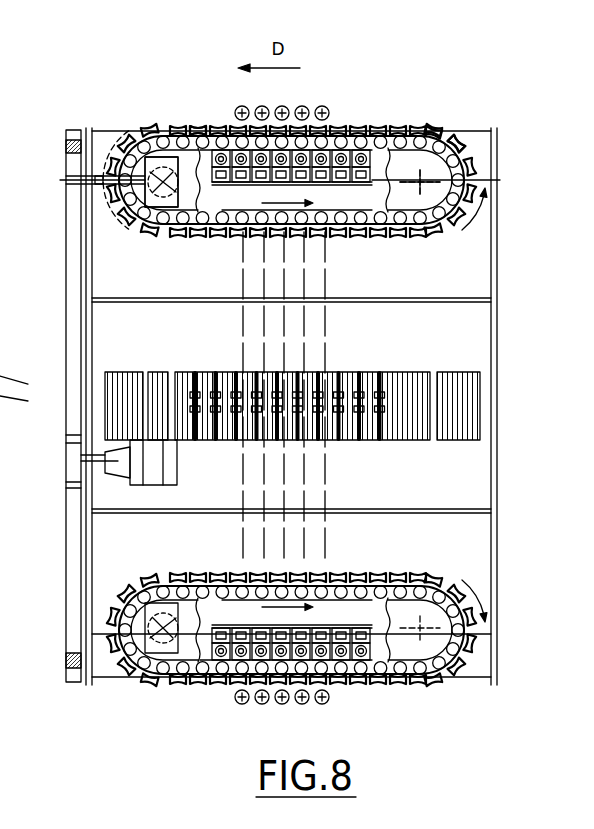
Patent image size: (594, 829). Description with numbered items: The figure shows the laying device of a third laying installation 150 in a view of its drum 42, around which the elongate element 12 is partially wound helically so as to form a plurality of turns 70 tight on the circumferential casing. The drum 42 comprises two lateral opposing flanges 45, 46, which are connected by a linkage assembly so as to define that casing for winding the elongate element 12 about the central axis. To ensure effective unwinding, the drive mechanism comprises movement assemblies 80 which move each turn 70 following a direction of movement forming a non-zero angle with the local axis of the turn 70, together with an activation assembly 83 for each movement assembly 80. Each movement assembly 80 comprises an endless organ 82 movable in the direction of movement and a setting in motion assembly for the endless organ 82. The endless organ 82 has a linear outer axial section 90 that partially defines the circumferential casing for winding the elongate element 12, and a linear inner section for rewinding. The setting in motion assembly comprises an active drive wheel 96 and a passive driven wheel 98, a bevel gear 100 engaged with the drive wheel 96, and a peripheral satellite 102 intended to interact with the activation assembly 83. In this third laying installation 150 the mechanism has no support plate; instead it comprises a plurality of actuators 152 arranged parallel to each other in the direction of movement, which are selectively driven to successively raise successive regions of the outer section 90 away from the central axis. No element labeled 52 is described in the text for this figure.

The elongate element 12 is at (320, 82).
The drum 42 is at (532, 295).
The lateral flange 45 is at (88, 590).
The lateral flange 46 is at (511, 362).
The cross member 52 is at (471, 298).
The turn 70 is at (280, 705).
The movement assembly 80 is at (397, 252).
The endless organ 82 is at (445, 120).
The activation assembly 83 is at (72, 127).
The linear outer axial section 90 is at (407, 120).
The active drive wheel 96 is at (184, 246).
The passive driven wheel 98 is at (433, 168).
The bevel gear 100 is at (165, 477).
The peripheral satellite 102 is at (77, 455).
The third laying installation 150 is at (460, 68).
The actuator 152 is at (199, 115).